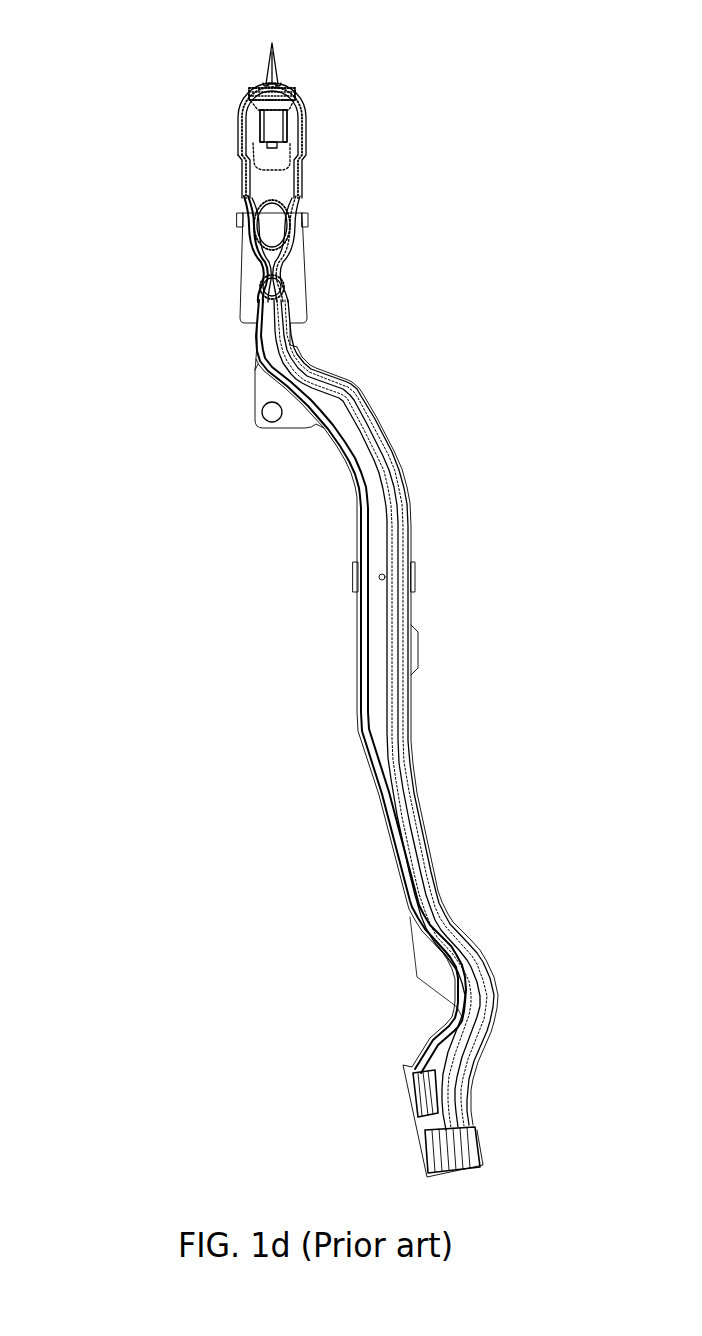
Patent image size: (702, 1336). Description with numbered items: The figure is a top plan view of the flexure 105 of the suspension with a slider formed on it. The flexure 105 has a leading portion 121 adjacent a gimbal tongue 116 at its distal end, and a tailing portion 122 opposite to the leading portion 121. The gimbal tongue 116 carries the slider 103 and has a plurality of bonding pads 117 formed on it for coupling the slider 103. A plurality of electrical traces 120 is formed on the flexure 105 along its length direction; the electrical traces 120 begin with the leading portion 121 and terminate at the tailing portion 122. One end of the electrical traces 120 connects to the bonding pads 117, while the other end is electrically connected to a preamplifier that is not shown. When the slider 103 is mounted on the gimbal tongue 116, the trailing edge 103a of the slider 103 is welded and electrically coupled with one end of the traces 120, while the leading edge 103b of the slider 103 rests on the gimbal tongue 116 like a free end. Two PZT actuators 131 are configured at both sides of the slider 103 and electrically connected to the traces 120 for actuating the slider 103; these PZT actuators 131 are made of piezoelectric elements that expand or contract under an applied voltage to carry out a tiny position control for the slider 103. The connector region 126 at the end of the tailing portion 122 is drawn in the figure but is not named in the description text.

The flexure 105 is at (60, 24).
The bonding pads 117 is at (277, 51).
The trailing edge 103a is at (273, 110).
The gimbal tongue 116 is at (285, 105).
The leading portion 121 is at (230, 113).
The slider 103 is at (273, 127).
The PZT actuators 131 is at (260, 132).
The leading edge 103b is at (277, 145).
The electrical traces 120 is at (242, 188).
The tailing portion 122 is at (378, 935).
The electrical connectors 126 is at (427, 1153).